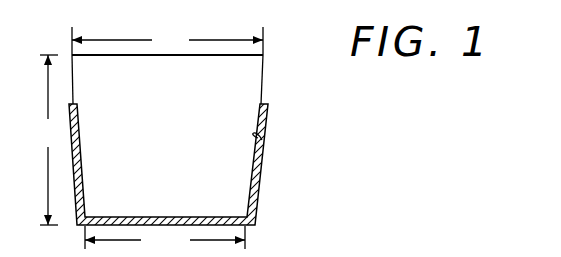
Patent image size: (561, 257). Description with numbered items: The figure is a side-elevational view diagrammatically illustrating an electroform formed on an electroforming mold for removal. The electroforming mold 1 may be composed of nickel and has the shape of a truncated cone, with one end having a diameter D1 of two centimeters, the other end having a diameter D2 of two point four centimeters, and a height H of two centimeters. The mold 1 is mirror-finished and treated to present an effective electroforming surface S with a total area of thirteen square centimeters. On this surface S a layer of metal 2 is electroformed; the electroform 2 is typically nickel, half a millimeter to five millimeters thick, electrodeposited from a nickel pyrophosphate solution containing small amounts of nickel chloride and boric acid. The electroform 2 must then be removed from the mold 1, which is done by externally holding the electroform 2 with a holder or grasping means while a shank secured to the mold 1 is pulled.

The electroforming mold 1 is at (199, 120).
The electroform 2 is at (260, 183).
The electroforming surface S is at (262, 136).
The height H is at (49, 140).
The diameter of one end D1 is at (165, 240).
The diameter of the other end D2 is at (167, 41).